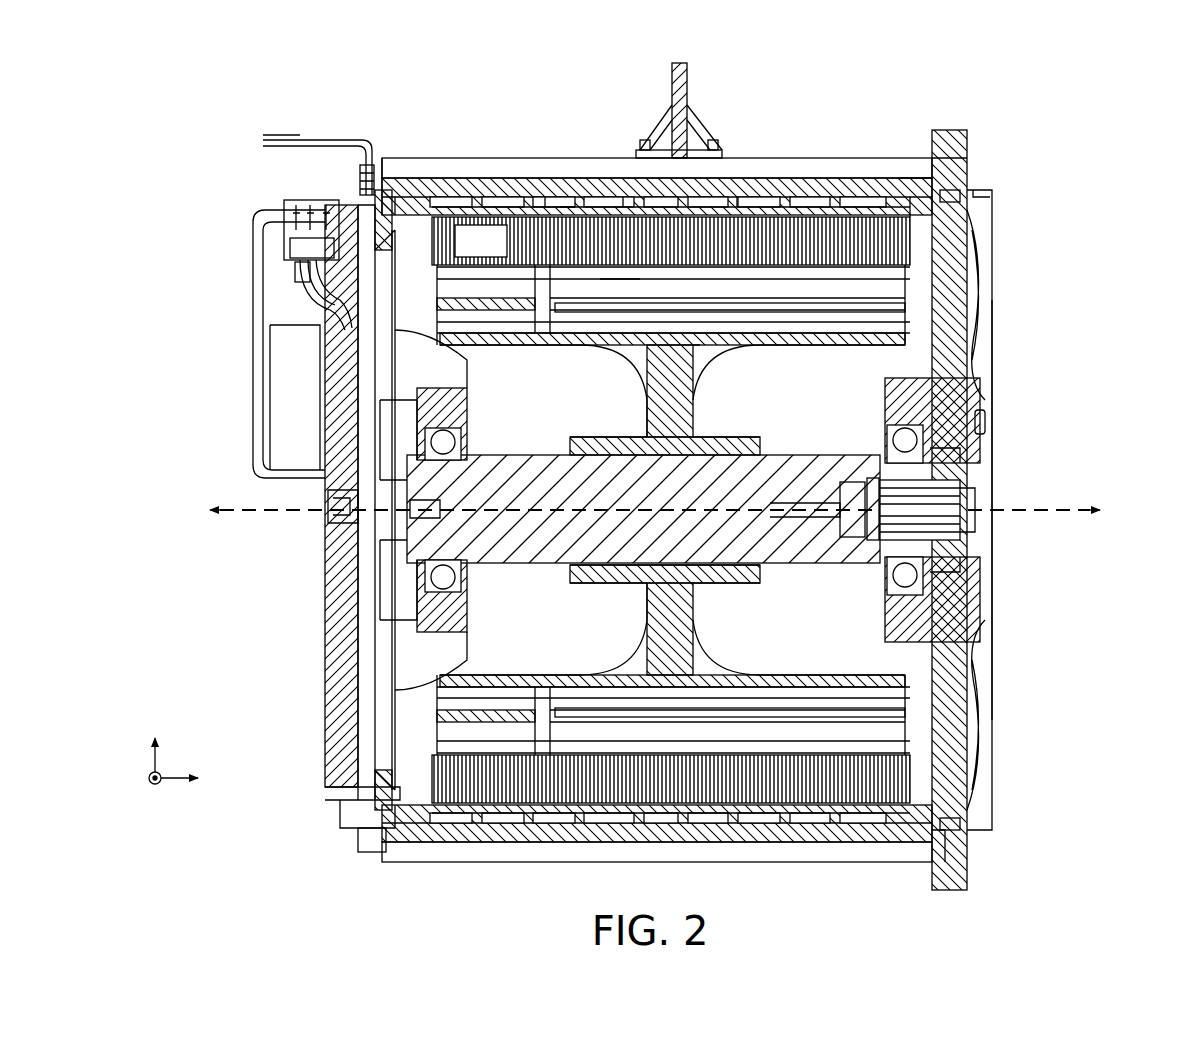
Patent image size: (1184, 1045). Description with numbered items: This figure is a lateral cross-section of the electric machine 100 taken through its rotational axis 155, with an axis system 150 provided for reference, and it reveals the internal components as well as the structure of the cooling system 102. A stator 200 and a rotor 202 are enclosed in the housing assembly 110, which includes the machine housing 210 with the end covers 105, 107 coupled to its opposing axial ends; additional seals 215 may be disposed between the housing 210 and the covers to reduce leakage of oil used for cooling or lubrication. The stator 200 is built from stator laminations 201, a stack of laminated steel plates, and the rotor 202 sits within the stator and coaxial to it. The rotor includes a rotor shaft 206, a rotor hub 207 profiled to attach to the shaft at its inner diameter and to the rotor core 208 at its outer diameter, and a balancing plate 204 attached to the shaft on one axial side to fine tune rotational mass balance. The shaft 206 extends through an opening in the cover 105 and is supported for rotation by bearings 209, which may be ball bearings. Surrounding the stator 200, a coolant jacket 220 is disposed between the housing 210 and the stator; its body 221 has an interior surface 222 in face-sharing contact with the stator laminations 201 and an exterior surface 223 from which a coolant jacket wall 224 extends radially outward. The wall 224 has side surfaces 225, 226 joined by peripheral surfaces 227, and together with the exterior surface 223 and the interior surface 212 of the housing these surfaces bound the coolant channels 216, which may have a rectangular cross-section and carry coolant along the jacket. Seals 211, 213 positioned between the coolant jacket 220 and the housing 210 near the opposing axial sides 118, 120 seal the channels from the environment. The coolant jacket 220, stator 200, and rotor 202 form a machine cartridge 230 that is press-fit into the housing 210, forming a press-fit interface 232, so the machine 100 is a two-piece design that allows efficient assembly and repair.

The electric machine 100 is at (1008, 70).
The cooling system 102 is at (872, 94).
The end cover 105 is at (965, 598).
The end cover 107 is at (337, 624).
The housing assembly 110 is at (280, 100).
The axial side 118 is at (1104, 192).
The axial side 120 is at (212, 190).
The axis system 150 is at (203, 735).
The rotational axis 155 is at (662, 531).
The stator 200 is at (962, 203).
The stator laminations 201 is at (902, 224).
The rotor 202 is at (905, 310).
The balancing plate 204 is at (412, 322).
The rotor shaft 206 is at (790, 455).
The rotor hub 207 is at (727, 352).
The rotor core 208 is at (604, 312).
The bearings 209 is at (735, 597).
The machine housing 210 is at (486, 186).
The seal 211 is at (960, 176).
The interior surface of the housing 212 is at (510, 239).
The seal 213 is at (398, 207).
The additional seal 215 is at (950, 822).
The coolant channels 216 is at (806, 196).
The coolant jacket 220 is at (418, 198).
The coolant jacket body 221 is at (420, 204).
The interior surface 222 is at (563, 202).
The exterior surface 223 is at (545, 197).
The coolant jacket wall 224 is at (623, 198).
The side surface 225 is at (648, 152).
The side surface 226 is at (710, 150).
The peripheral surfaces 227 is at (737, 196).
The machine cartridge 230 is at (998, 422).
The press-fit interface 232 is at (908, 194).